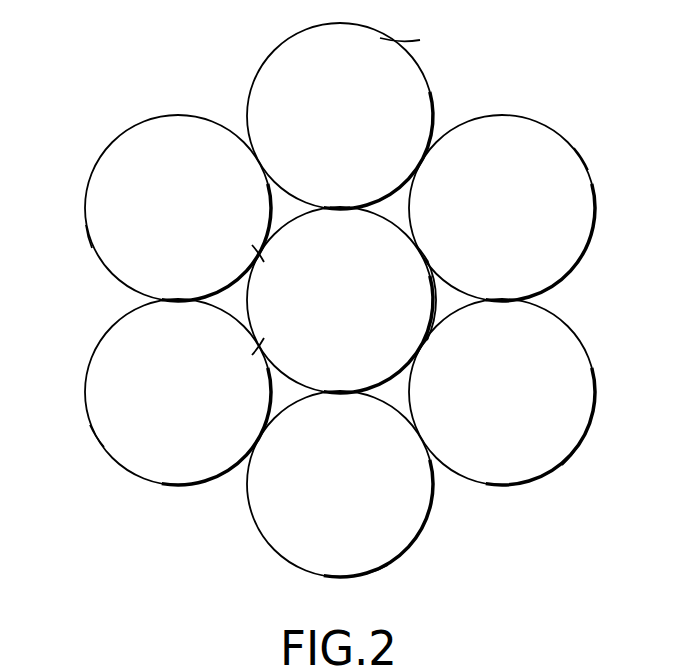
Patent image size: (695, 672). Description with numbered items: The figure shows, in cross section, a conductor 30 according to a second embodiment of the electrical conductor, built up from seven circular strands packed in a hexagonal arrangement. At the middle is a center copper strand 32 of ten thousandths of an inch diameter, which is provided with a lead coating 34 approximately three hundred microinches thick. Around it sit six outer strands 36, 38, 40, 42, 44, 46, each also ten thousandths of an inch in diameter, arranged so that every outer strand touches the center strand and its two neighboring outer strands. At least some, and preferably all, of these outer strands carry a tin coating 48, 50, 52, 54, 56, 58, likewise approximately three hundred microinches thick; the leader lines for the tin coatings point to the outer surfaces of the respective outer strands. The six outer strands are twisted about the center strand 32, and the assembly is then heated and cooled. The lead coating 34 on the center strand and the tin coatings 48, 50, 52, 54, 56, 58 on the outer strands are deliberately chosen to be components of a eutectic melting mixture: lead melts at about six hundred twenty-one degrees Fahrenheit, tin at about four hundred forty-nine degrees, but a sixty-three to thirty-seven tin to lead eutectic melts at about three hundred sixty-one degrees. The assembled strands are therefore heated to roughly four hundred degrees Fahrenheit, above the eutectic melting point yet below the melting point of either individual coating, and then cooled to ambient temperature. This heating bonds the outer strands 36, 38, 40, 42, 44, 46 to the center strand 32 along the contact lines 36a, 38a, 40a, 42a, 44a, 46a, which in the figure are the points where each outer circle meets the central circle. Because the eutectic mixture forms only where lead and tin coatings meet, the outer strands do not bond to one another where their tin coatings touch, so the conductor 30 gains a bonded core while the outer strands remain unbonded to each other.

The conductor 30 is at (188, 535).
The center copper strand 32 is at (356, 315).
The lead coating 34 is at (432, 300).
The outer strand 36 is at (181, 421).
The contact line 36a is at (259, 347).
The outer strand 38 is at (179, 218).
The contact line 38a is at (259, 253).
The outer strand 40 is at (354, 123).
The contact line 40a is at (345, 206).
The outer strand 42 is at (526, 220).
The contact line 42a is at (421, 255).
The outer strand 44 is at (521, 410).
The contact line 44a is at (421, 347).
The outer strand 46 is at (359, 501).
The contact line 46a is at (340, 394).
The tin coating 48 is at (96, 437).
The tin coating 50 is at (89, 236).
The tin coating 52 is at (400, 42).
The tin coating 54 is at (582, 158).
The tin coating 56 is at (571, 455).
The tin coating 58 is at (376, 569).